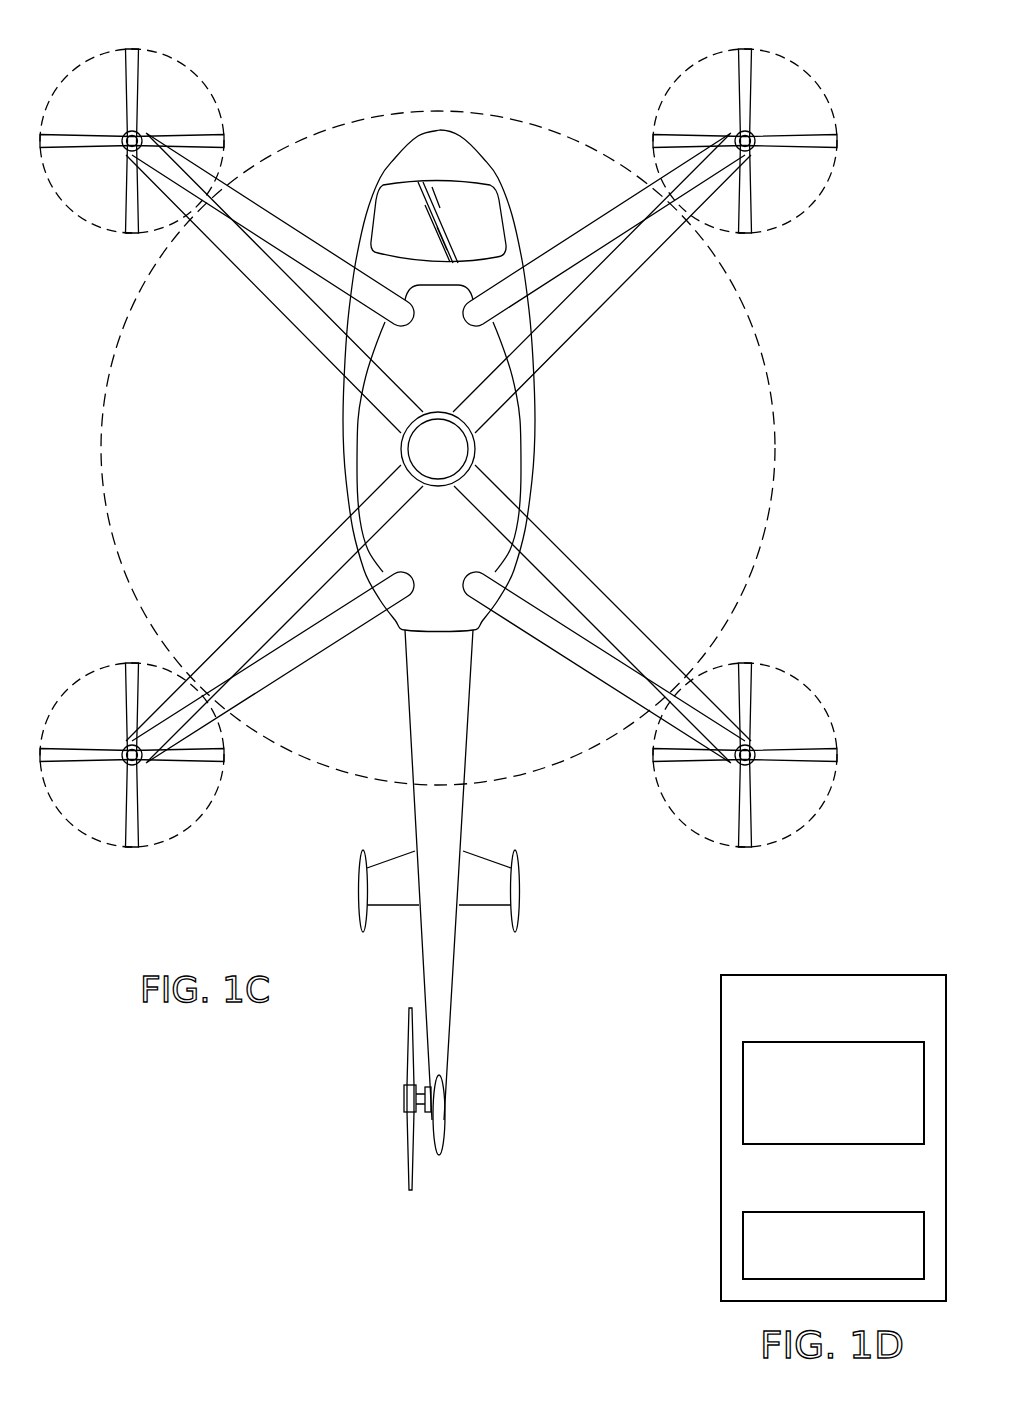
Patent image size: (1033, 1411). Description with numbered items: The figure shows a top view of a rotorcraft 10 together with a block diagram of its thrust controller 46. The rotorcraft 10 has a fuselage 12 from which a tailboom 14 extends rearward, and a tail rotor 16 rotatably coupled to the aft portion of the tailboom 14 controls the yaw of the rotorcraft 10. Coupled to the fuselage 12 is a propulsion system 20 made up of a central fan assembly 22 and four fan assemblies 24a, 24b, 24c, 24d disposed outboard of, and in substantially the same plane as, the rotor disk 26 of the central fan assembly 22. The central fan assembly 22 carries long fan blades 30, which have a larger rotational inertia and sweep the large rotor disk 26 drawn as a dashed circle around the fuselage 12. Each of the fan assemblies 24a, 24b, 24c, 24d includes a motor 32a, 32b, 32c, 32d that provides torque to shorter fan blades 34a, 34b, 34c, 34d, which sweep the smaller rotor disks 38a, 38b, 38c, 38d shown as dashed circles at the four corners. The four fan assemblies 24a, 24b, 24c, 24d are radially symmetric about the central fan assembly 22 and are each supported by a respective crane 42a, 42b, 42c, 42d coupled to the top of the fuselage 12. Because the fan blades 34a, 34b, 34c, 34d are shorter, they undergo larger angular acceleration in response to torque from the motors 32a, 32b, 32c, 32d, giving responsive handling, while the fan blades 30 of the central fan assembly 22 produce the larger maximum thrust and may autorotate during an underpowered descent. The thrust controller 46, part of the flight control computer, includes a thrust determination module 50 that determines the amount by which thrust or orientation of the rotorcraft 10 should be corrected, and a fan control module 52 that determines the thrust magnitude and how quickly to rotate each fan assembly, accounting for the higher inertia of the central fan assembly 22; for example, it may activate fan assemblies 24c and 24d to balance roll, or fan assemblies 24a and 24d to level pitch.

In FIG. 1C, the rotorcraft 10 is at (856, 293).
In FIG. 1C, the fuselage 12 is at (494, 170).
In FIG. 1C, the tailboom 14 is at (455, 970).
In FIG. 1C, the tail rotor 16 is at (405, 1099).
In FIG. 1C, the propulsion system 20 is at (752, 629).
In FIG. 1C, the central fan assembly 22 is at (395, 449).
In FIG. 1C, the fan assembly 24a is at (147, 154).
In FIG. 1C, the fan assembly 24b is at (151, 765).
In FIG. 1C, the fan assembly 24c is at (756, 787).
In FIG. 1C, the fan assembly 24d is at (724, 154).
In FIG. 1C, the rotor disk 26 is at (782, 438).
In FIG. 1C, the fan blades 30 is at (270, 584).
In FIG. 1C, the motor 32a is at (125, 135).
In FIG. 1C, the motor 32b is at (125, 764).
In FIG. 1C, the motor 32c is at (752, 764).
In FIG. 1C, the motor 32d is at (752, 135).
In FIG. 1C, the fan blades 34a is at (126, 62).
In FIG. 1C, the fan blades 34b is at (128, 840).
In FIG. 1C, the fan blades 34c is at (748, 840).
In FIG. 1C, the fan blades 34d is at (753, 62).
In FIG. 1C, the rotor disk 38a is at (93, 230).
In FIG. 1C, the rotor disk 38b is at (96, 668).
In FIG. 1C, the rotor disk 38c is at (838, 738).
In FIG. 1C, the rotor disk 38d is at (785, 230).
In FIG. 1C, the crane 42a is at (286, 216).
In FIG. 1C, the crane 42b is at (318, 662).
In FIG. 1C, the crane 42c is at (560, 662).
In FIG. 1C, the crane 42d is at (590, 216).
In FIG. 1D, the thrust controller 46 is at (833, 1107).
In FIG. 1D, the thrust determination module 50 is at (797, 1146).
In FIG. 1D, the fan control module 52 is at (867, 1210).